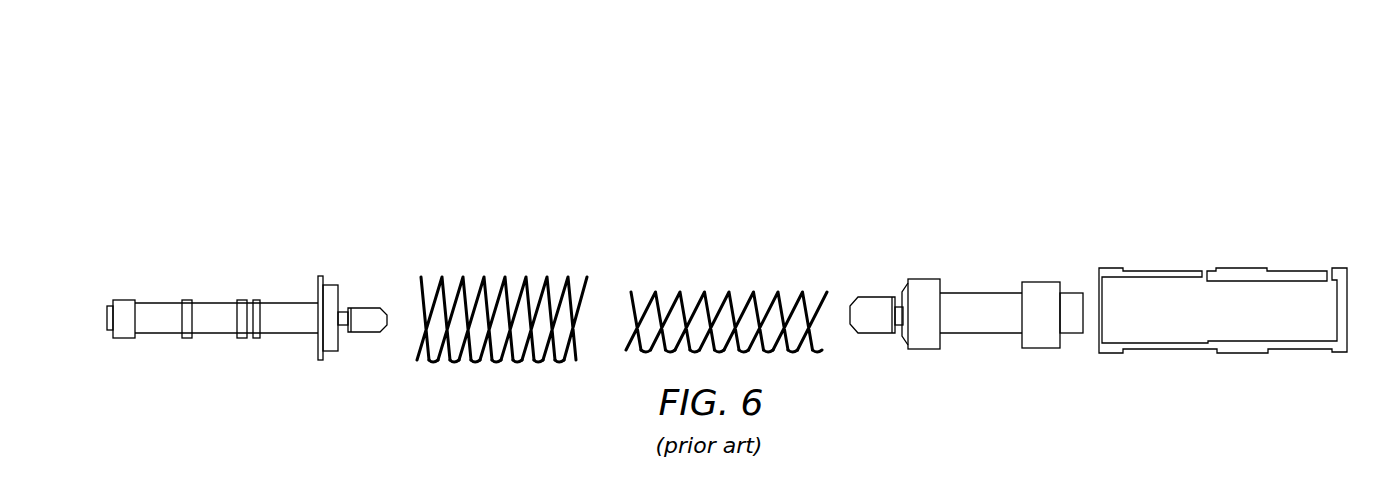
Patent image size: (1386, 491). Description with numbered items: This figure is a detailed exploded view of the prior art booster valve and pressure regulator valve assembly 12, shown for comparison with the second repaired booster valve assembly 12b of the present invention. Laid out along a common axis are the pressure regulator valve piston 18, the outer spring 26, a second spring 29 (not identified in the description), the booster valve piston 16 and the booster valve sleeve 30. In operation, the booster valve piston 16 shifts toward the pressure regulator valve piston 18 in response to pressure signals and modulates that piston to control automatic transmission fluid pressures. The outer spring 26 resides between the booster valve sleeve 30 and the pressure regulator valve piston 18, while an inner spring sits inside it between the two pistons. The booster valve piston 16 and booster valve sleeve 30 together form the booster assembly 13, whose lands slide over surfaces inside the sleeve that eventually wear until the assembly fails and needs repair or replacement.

The booster valve and pressure regulator valve assembly 12 is at (463, 143).
The second repaired booster valve assembly 12b is at (247, 315).
The pressure regulator valve piston 18 is at (222, 258).
The outer spring 26 is at (510, 247).
The second spring 29 is at (717, 266).
The booster valve piston 16 is at (955, 264).
The booster valve sleeve 30 is at (1195, 250).
The booster assembly 13 is at (855, 380).